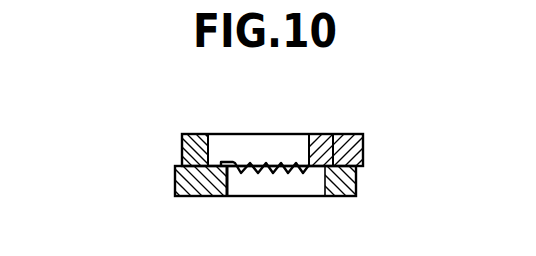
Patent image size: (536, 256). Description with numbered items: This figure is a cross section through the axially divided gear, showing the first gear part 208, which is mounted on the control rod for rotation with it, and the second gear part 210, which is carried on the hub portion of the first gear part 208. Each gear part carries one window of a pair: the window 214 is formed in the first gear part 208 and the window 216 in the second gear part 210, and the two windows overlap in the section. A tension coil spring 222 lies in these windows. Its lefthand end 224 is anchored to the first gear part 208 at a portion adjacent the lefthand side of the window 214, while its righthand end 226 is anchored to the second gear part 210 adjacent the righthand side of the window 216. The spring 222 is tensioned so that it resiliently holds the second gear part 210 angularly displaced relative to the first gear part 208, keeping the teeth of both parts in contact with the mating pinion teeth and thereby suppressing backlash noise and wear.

The first gear part 208 is at (350, 188).
The second gear part 210 is at (190, 153).
The window 214 is at (264, 182).
The window 216 is at (237, 146).
The tension coil spring 222 is at (277, 162).
The lefthand end 224 is at (203, 171).
The righthand end 226 is at (318, 157).